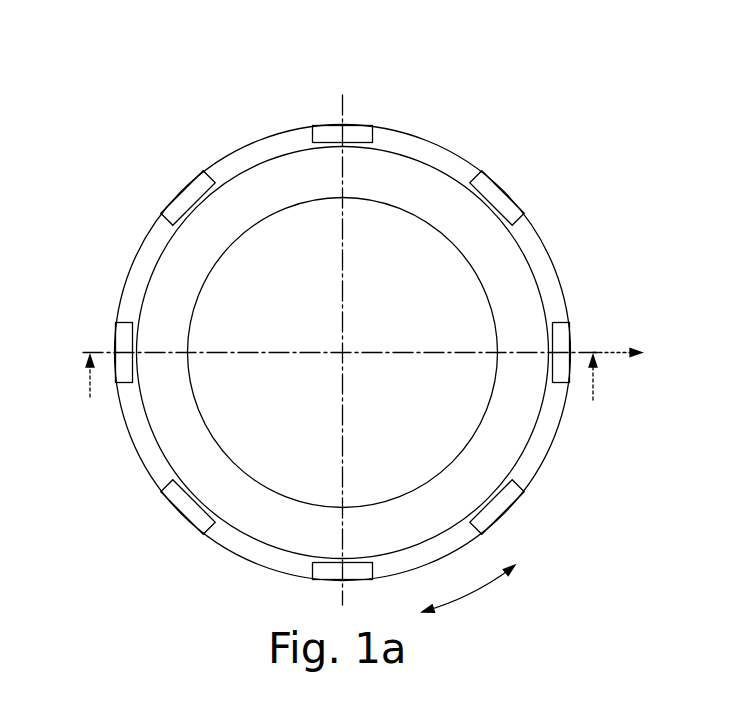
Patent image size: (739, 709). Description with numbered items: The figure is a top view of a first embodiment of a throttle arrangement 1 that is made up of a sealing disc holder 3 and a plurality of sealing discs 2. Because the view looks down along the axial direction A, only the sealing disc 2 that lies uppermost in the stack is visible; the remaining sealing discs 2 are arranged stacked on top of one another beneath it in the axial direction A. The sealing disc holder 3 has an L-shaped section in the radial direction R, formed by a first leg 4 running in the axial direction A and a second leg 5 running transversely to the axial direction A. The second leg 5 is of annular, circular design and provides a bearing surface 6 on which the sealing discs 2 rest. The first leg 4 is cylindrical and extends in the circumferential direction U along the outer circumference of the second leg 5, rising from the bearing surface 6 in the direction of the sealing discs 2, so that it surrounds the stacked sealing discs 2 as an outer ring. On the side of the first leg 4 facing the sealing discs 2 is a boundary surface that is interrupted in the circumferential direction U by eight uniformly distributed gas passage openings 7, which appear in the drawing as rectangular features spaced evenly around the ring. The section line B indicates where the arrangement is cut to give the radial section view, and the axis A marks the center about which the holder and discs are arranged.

The throttle arrangement 1 is at (316, 74).
The sealing discs 2 is at (425, 185).
The sealing disc holder 3 is at (554, 461).
The first leg 4 is at (500, 190).
The second leg 5 is at (118, 307).
The bearing surface 6 is at (145, 260).
The gas passage openings 7 is at (532, 240).
The axial direction A is at (342, 352).
The section plane B is at (342, 393).
The radial direction R is at (617, 369).
The circumferential direction U is at (468, 595).